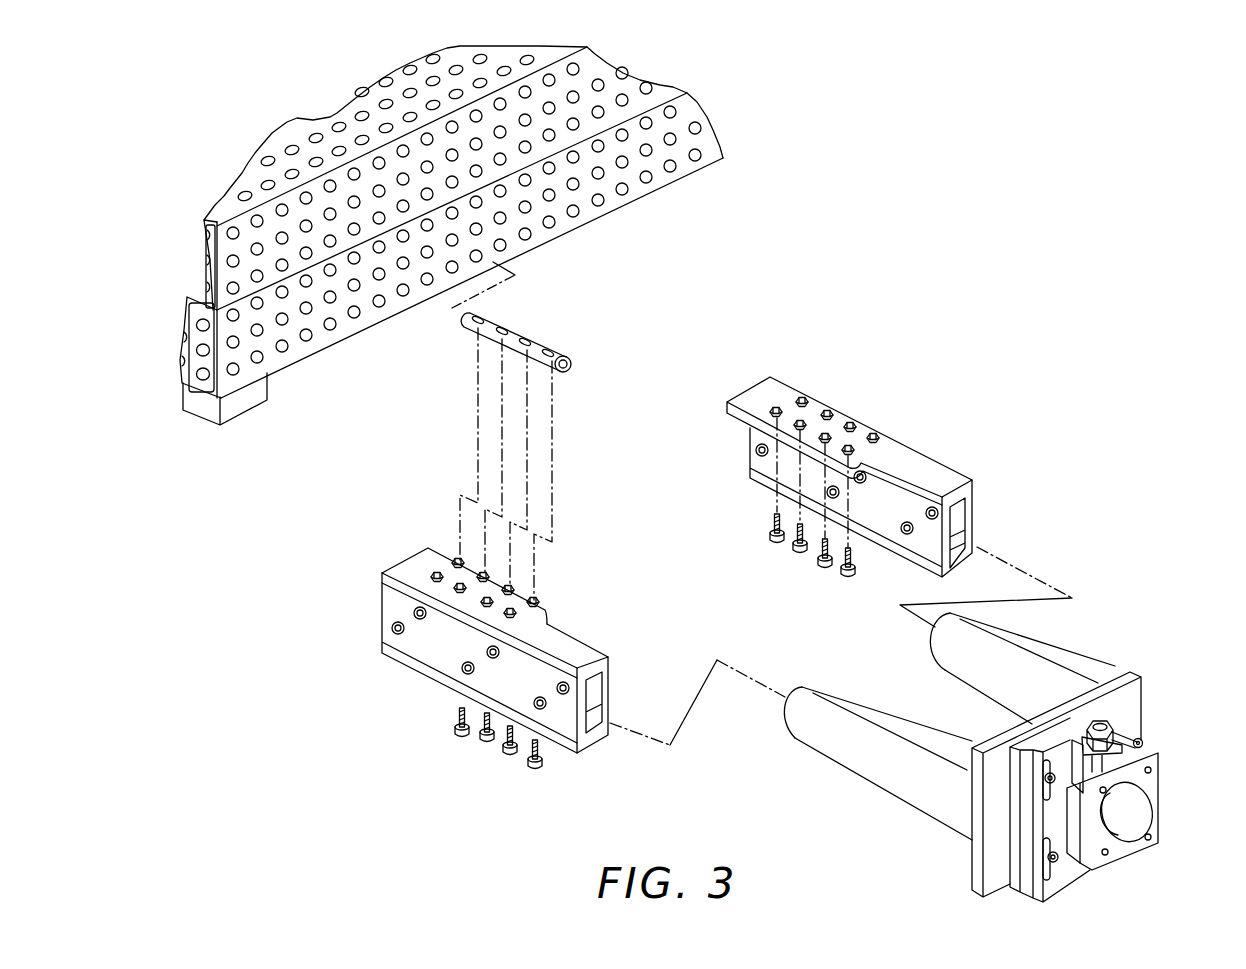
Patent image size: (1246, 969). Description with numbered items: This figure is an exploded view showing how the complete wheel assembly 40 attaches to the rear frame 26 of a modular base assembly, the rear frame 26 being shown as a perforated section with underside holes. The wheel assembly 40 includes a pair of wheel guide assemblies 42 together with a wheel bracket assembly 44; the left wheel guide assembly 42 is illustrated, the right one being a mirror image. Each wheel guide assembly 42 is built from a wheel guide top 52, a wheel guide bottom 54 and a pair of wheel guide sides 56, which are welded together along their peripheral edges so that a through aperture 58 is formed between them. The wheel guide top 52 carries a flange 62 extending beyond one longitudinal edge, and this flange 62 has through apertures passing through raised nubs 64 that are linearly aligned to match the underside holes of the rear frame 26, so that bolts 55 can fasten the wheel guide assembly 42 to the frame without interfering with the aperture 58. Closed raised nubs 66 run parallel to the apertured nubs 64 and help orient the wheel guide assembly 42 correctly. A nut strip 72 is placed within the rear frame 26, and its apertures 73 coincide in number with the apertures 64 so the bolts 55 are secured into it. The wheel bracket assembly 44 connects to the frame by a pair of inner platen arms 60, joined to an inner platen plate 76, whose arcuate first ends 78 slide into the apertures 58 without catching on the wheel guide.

The rear frame 26 is at (548, 243).
The wheel assembly 40 is at (974, 721).
The wheel guide assembly 42 is at (617, 582).
The wheel bracket assembly 44 is at (1044, 636).
The wheel guide top 52 is at (567, 638).
The wheel guide bottom 54 is at (420, 673).
The bolts 55 is at (535, 769).
The wheel guide sides 56 is at (885, 530).
The through aperture 58 is at (615, 727).
The inner platen arm 60 is at (927, 726).
The flange 62 is at (547, 607).
The raised nubs 64 is at (455, 560).
The closed raised nubs 66 is at (432, 573).
The nut strip 72 is at (548, 330).
The nut strip apertures 73 is at (483, 318).
The inner platen plate 76 is at (1133, 690).
The first ends 78 is at (782, 703).